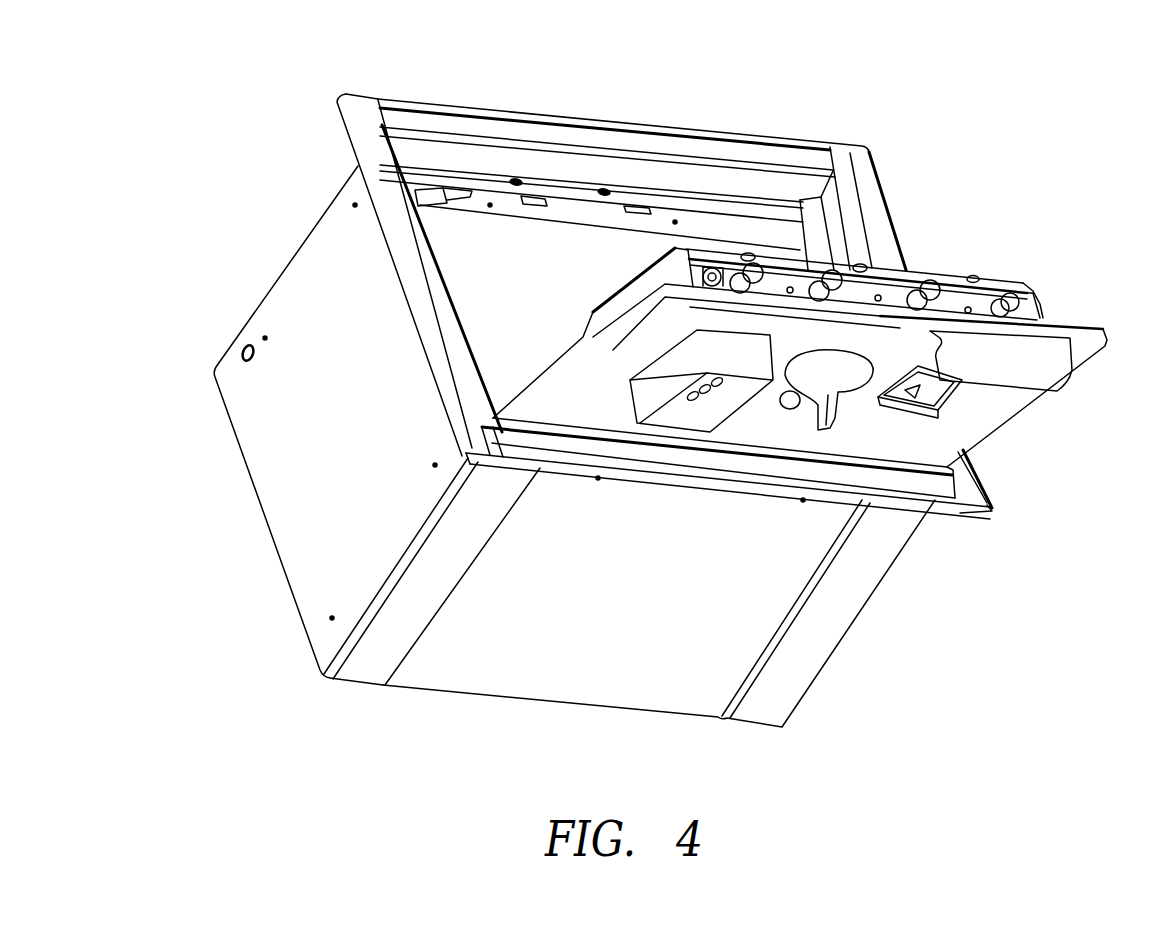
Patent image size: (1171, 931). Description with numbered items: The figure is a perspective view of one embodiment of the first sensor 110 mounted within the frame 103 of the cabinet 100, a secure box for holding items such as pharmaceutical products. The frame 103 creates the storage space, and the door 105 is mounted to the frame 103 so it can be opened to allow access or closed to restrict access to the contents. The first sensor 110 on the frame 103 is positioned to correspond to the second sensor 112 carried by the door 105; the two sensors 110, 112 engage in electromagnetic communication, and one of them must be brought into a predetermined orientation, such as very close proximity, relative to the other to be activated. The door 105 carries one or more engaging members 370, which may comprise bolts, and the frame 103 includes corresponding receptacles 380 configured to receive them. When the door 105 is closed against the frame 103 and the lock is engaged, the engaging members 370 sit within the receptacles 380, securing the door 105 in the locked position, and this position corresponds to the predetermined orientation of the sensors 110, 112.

The cabinet 100 is at (724, 68).
The frame 103 is at (287, 588).
The door 105 is at (1040, 369).
The first sensor 110 is at (400, 181).
The second sensor 112 is at (712, 268).
The engaging member 370 is at (832, 283).
The receptacle 380 is at (534, 200).